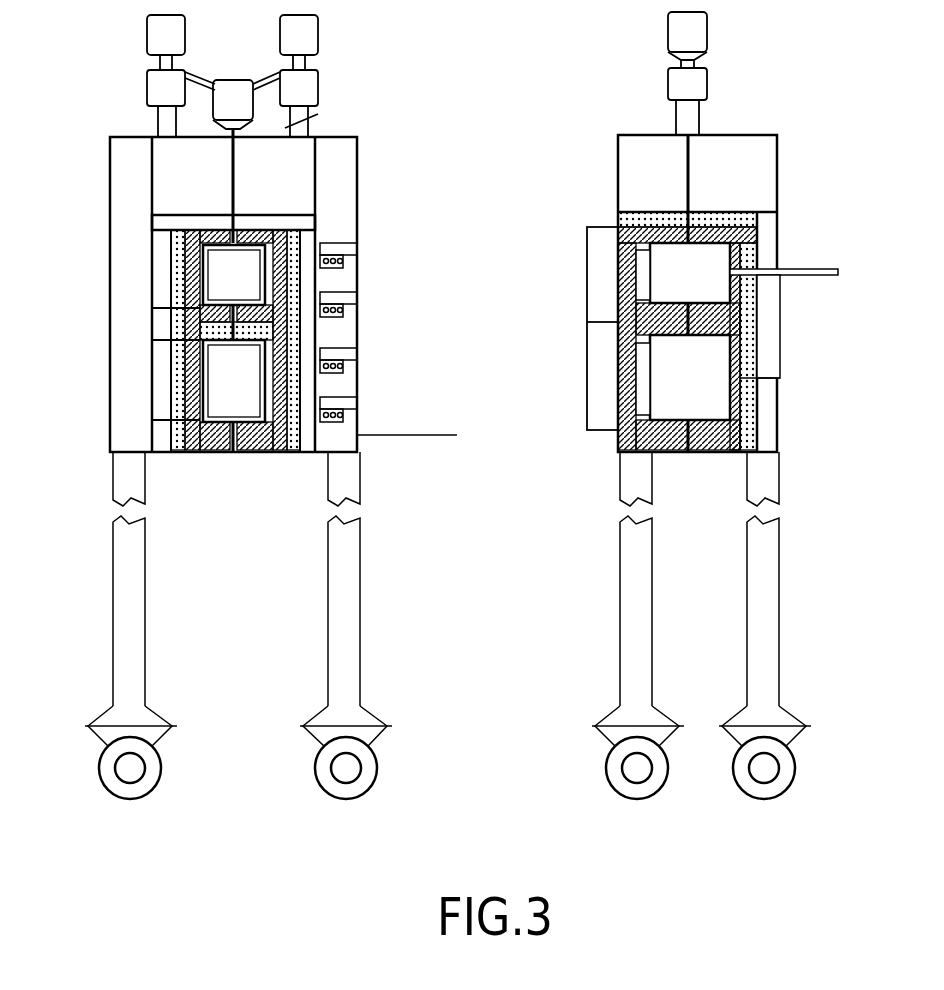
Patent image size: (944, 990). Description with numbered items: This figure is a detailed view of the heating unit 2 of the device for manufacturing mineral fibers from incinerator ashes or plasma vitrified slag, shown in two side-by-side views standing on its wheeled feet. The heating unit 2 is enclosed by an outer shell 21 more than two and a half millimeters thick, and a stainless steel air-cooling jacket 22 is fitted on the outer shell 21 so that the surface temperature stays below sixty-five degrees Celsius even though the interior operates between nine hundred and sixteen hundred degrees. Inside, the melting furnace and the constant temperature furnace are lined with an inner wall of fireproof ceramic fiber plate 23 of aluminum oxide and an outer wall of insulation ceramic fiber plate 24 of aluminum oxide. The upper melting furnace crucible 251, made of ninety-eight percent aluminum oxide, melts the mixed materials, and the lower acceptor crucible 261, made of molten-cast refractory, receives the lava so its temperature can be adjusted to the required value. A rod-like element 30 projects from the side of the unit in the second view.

The heating unit 2 is at (407, 157).
The outer shell 21 is at (153, 112).
The air-cooling jacket 22 is at (110, 180).
The fireproof ceramic fiber plate 23 is at (303, 228).
The insulation ceramic fiber plate 24 is at (285, 215).
The melting furnace crucible 251 is at (225, 273).
The acceptor crucible 261 is at (225, 377).
The sensor rod 30 is at (803, 268).